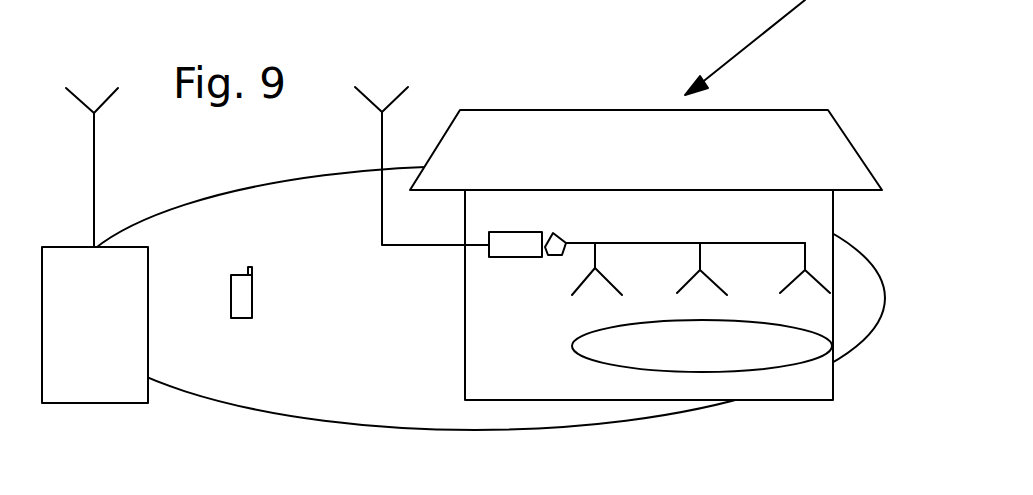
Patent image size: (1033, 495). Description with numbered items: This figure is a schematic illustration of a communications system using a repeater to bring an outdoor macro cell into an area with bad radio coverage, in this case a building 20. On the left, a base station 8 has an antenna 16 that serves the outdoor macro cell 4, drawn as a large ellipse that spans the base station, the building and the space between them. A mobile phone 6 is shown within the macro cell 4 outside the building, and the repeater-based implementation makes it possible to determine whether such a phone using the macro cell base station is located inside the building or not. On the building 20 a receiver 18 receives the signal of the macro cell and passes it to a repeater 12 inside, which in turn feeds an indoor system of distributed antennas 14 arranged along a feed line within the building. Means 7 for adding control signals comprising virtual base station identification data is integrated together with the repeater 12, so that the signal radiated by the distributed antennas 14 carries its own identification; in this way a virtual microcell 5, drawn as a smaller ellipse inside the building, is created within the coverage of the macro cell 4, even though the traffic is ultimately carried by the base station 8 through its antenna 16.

The outdoor macro cell 4 is at (520, 421).
The virtual microcell 5 is at (797, 362).
The mobile terminal 6 is at (248, 300).
The means for adding control signals 7 is at (562, 236).
The base station 8 is at (137, 382).
The repeater 12 is at (515, 251).
The distributed antennas 14 is at (620, 294).
The antenna 16 is at (100, 107).
The receiver 18 is at (370, 104).
The building 20 is at (470, 311).